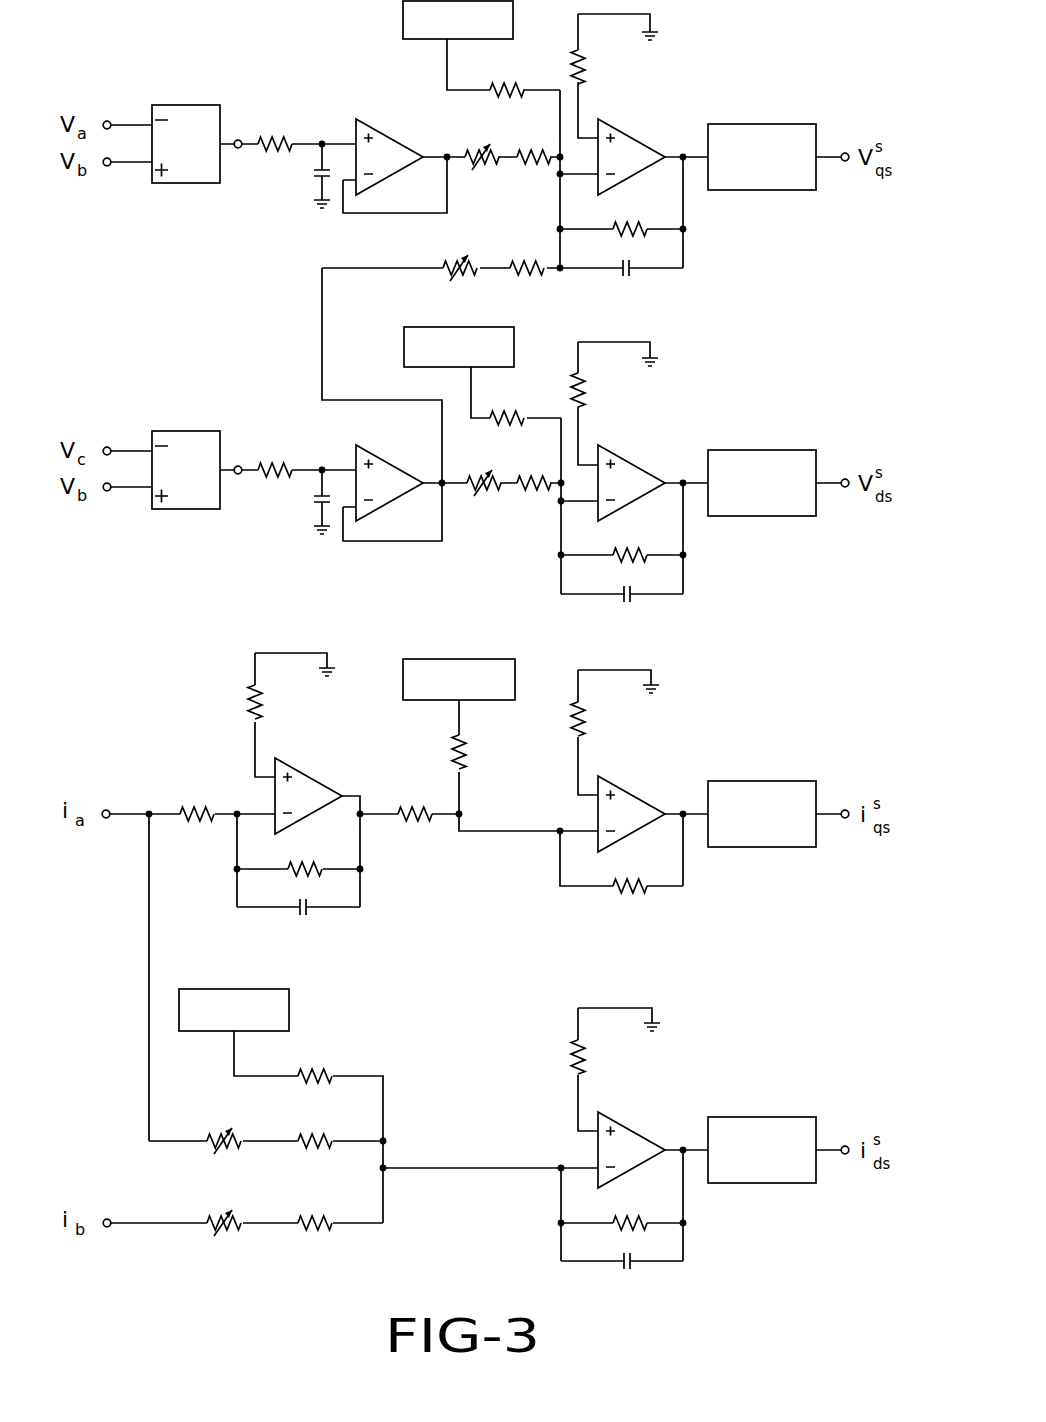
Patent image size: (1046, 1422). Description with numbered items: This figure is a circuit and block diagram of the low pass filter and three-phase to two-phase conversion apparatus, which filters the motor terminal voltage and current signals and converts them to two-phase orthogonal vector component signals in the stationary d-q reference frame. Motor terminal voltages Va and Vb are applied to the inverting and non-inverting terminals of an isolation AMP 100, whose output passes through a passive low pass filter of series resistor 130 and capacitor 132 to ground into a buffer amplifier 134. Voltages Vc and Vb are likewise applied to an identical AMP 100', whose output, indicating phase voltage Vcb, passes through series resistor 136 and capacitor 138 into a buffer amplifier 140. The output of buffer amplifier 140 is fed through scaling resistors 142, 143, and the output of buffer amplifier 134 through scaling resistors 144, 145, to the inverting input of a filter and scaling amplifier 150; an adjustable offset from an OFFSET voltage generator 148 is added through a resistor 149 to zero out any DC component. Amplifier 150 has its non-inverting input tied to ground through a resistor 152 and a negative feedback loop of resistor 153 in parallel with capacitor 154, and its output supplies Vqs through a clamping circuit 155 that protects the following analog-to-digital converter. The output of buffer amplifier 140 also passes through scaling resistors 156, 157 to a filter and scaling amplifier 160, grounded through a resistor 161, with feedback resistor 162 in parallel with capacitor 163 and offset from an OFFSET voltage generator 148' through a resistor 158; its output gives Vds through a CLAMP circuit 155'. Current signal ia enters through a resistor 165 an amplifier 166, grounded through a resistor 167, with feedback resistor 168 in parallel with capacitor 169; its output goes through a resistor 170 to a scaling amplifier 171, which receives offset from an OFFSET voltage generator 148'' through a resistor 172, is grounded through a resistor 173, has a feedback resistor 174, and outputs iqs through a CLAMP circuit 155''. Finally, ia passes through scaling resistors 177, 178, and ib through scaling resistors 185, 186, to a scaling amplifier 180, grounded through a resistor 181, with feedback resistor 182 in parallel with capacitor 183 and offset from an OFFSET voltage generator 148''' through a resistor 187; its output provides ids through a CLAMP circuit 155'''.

The AMP 100 is at (147, 171).
The AMP 100' is at (146, 497).
The series resistor 130 is at (273, 135).
The capacitor 132 is at (303, 186).
The buffer amplifier 134 is at (375, 130).
The series resistor 136 is at (263, 461).
The capacitor 138 is at (303, 512).
The buffer amplifier 140 is at (364, 455).
The scaling resistor 142 is at (450, 261).
The scaling resistor 143 is at (533, 274).
The scaling resistor 144 is at (467, 139).
The scaling resistor 145 is at (534, 169).
The OFFSET voltage generator 148 is at (409, 20).
The OFFSET voltage generator 148' is at (428, 335).
The OFFSET voltage generator 148'' is at (426, 667).
The OFFSET voltage generator 148''' is at (234, 995).
The resistor 149 is at (493, 88).
The filter and scaling amplifier 150 is at (624, 133).
The resistor 152 is at (585, 66).
The resistor 153 is at (614, 226).
The capacitor 154 is at (628, 277).
The clamping circuit 155 is at (775, 140).
The CLAMP circuit 155' is at (778, 467).
The CLAMP circuit 155'' is at (782, 798).
The CLAMP circuit 155''' is at (782, 1134).
The scaling resistor 156 is at (467, 466).
The scaling resistor 157 is at (535, 494).
The resistor 158 is at (493, 414).
The filter and scaling amplifier 160 is at (626, 460).
The resistor 161 is at (587, 400).
The resistor 162 is at (614, 553).
The capacitor 163 is at (628, 603).
The resistor 165 is at (188, 805).
The amplifier 166 is at (304, 775).
The resistor 167 is at (263, 712).
The resistor 168 is at (291, 866).
The capacitor 169 is at (305, 916).
The resistor 170 is at (406, 822).
The scaling amplifier 171 is at (627, 793).
The resistor 172 is at (466, 752).
The resistor 173 is at (586, 719).
The negative feedback resistor 174 is at (614, 883).
The scaling resistor 177 is at (239, 1152).
The scaling resistor 178 is at (314, 1139).
The scaling amplifier 180 is at (627, 1130).
The resistor 181 is at (587, 1057).
The resistor 182 is at (611, 1221).
The capacitor 183 is at (628, 1270).
The scaling resistor 185 is at (239, 1236).
The scaling resistor 186 is at (314, 1222).
The resistor 187 is at (314, 1074).